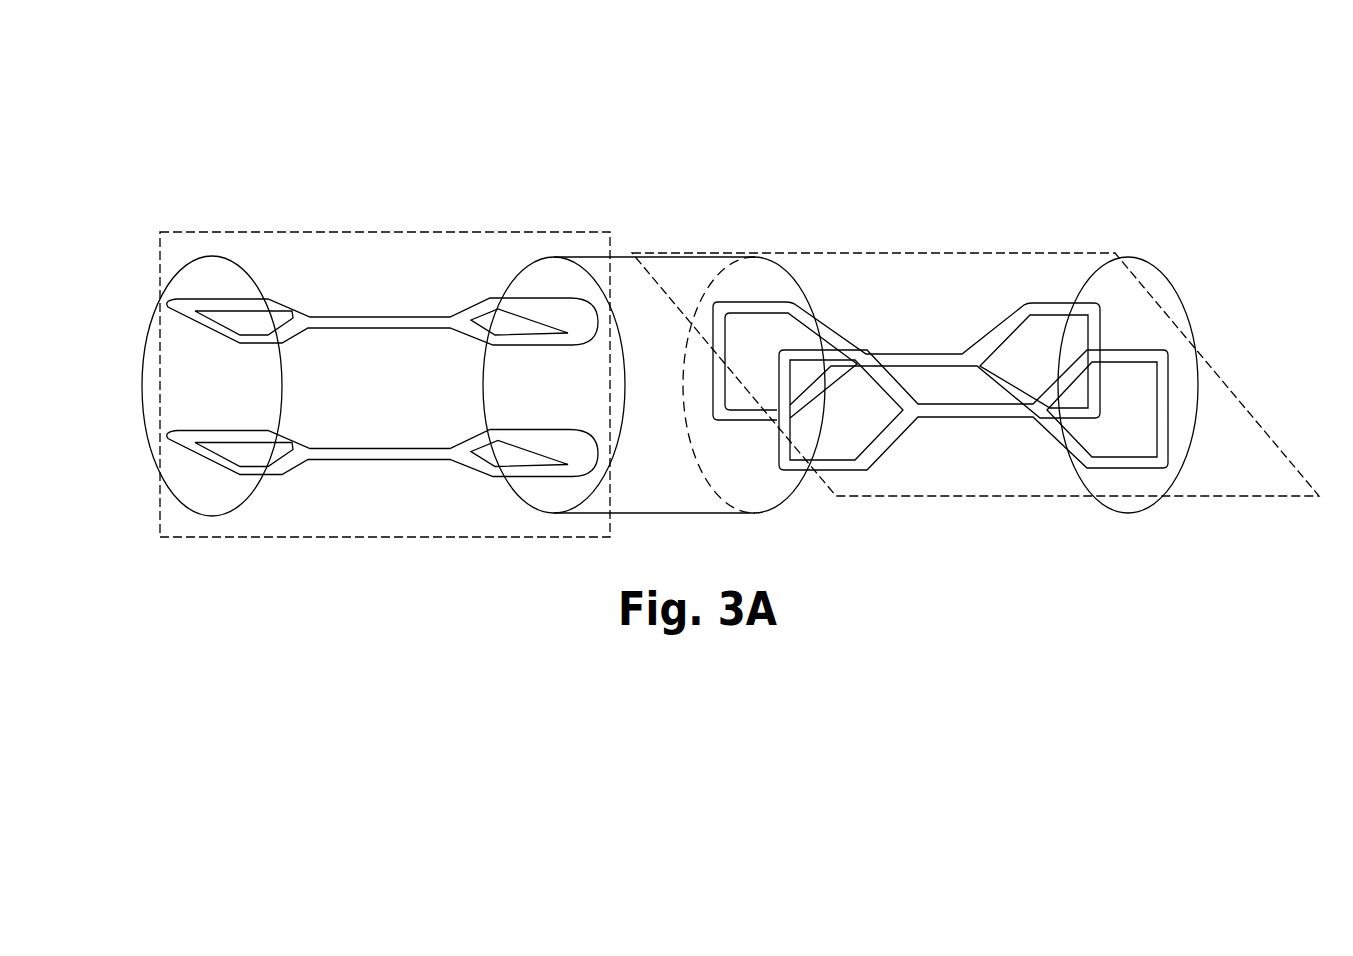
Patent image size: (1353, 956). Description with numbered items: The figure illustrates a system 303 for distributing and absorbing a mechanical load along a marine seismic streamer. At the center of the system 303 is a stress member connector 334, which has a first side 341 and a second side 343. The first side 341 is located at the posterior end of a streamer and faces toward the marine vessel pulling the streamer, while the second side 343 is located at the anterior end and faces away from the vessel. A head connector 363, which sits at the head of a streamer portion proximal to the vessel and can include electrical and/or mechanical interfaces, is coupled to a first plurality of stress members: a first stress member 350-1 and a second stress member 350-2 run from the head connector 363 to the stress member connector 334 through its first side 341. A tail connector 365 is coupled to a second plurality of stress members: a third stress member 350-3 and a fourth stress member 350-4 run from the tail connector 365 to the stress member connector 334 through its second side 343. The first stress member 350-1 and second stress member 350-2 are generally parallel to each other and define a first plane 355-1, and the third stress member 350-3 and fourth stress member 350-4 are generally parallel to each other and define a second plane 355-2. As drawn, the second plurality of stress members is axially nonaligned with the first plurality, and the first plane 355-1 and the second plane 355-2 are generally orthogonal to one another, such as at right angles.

The system 303 is at (277, 130).
The stress member connector 334 is at (667, 268).
The first side 341 is at (553, 268).
The second side 343 is at (752, 268).
The first stress member 350-1 is at (388, 313).
The second stress member 350-2 is at (390, 462).
The third stress member 350-3 is at (970, 416).
The fourth stress member 350-4 is at (838, 337).
The first plane 355-1 is at (315, 540).
The second plane 355-2 is at (1000, 500).
The head connector 363 is at (155, 397).
The tail connector 365 is at (1140, 272).